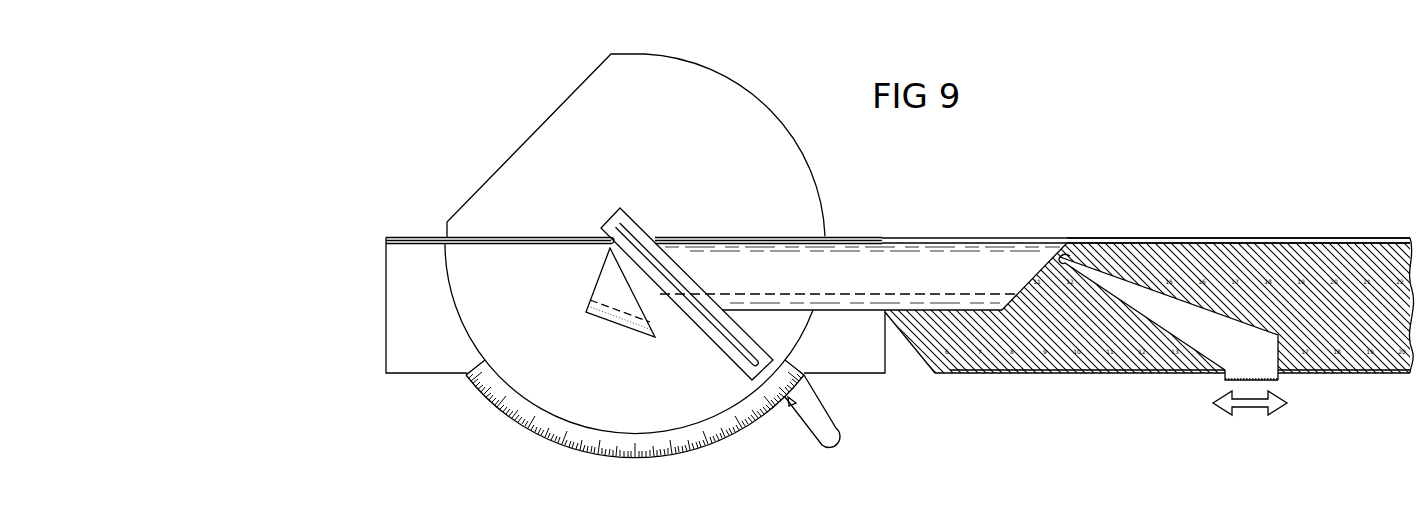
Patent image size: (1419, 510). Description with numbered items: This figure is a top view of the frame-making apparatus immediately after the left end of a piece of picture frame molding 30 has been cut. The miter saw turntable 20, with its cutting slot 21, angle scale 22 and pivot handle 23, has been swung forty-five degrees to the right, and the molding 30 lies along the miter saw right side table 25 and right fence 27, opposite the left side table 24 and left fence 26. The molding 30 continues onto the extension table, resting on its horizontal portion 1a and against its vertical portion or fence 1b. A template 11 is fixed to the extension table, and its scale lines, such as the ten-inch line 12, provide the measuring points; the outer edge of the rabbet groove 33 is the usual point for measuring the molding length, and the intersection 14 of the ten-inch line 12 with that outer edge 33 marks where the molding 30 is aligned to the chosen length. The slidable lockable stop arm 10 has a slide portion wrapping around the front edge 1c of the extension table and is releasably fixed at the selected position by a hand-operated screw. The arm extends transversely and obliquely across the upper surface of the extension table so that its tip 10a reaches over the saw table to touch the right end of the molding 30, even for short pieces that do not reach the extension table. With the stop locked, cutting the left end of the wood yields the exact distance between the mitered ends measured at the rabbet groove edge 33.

The horizontal portion of extension table 1a is at (900, 365).
The vertical portion or fence of extension table 1b is at (1166, 243).
The front edge of extension table 1c is at (1157, 373).
The slidable lockable stop arm 10 is at (1224, 357).
The tip of stop arm 10a is at (1063, 258).
The template 11 is at (1030, 373).
The 10-inch line on template 12 is at (1060, 337).
The intersection of 10-inch line and outer edge of rabbet 14 is at (1018, 296).
The miter saw turntable 20 is at (597, 392).
The miter saw cutting slot 21 is at (737, 357).
The miter saw angle scale 22 is at (490, 402).
The miter saw pivot handle 23 is at (795, 420).
The miter saw left side table 24 is at (410, 357).
The miter saw right side table 25 is at (825, 357).
The miter saw left fence 26 is at (520, 237).
The miter saw right fence 27 is at (755, 237).
The molding for picture frame 30 is at (835, 284).
The outer edge of rabbet groove 33 is at (977, 292).